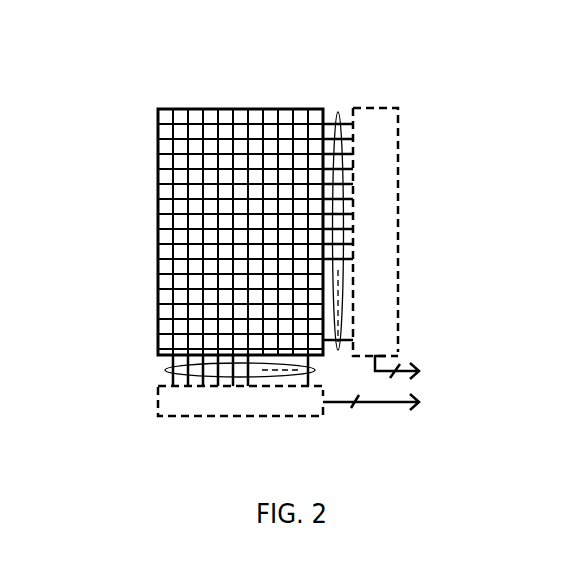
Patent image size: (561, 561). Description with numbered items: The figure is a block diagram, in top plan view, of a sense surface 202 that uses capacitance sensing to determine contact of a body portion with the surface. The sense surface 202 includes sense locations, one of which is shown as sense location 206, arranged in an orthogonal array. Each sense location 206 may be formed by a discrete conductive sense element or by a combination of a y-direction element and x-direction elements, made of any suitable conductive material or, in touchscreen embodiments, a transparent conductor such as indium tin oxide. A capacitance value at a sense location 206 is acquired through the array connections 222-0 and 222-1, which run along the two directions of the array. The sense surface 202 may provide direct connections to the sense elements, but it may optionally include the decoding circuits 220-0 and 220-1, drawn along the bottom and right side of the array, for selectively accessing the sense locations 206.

The sense surface 202 is at (157, 55).
The sense location 206 is at (159, 161).
The array connection 222-1 is at (337, 121).
The decoding circuit 220-1 is at (386, 243).
The array connection 222-0 is at (167, 371).
The decoding circuit 220-0 is at (288, 401).